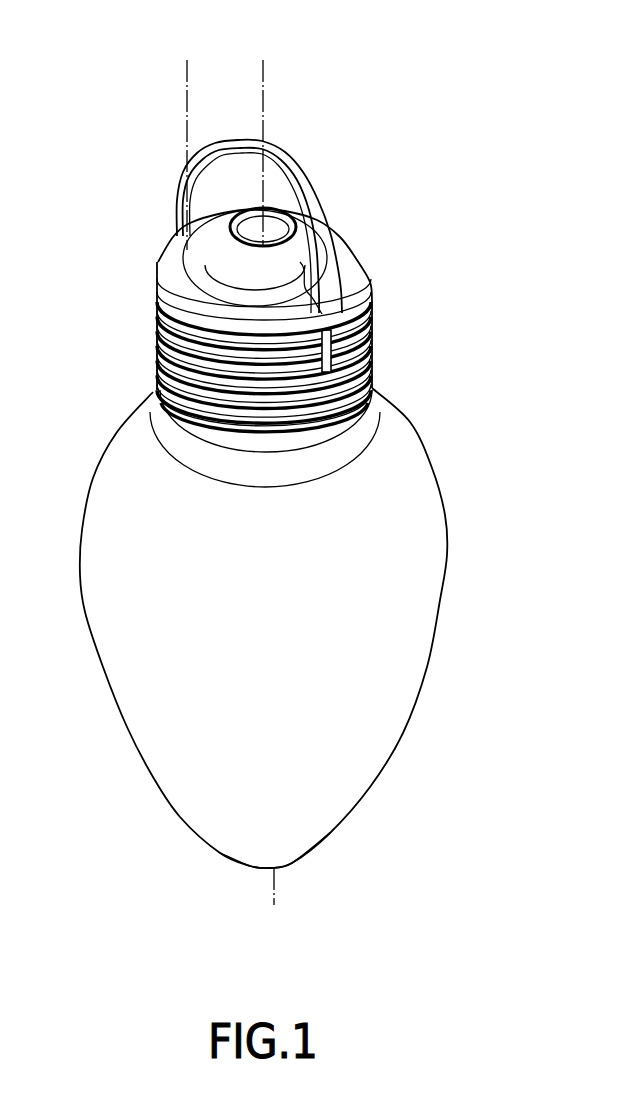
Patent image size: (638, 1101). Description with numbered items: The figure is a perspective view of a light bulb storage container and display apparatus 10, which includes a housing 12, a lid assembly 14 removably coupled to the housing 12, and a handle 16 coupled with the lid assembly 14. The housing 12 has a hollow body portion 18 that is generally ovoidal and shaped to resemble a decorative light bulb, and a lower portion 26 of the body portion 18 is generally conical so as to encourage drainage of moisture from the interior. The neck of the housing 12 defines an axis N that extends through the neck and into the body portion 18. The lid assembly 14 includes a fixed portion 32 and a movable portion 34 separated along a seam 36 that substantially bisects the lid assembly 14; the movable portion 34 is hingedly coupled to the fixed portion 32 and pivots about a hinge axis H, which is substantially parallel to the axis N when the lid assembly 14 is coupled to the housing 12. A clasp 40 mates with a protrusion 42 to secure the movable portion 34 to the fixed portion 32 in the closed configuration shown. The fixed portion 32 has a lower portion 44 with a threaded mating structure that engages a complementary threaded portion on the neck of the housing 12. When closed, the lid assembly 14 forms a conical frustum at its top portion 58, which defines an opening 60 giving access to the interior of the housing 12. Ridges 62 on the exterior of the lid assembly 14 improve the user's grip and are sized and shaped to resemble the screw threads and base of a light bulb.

The apparatus 10 is at (124, 98).
The housing 12 is at (413, 423).
The lid assembly 14 is at (375, 299).
The handle 16 is at (278, 166).
The hollow body portion 18 is at (264, 637).
The lower portion 26 is at (288, 865).
The fixed portion 32 is at (353, 263).
The movable portion 34 is at (170, 281).
The seam 36 is at (305, 311).
The clasp 40 is at (342, 357).
The protrusion 42 is at (326, 351).
The lower portion 44 is at (153, 391).
The top portion 58 is at (222, 255).
The opening 60 is at (247, 222).
The ridges 62 is at (298, 423).
The hinge axis H is at (184, 137).
The axis N is at (266, 98).